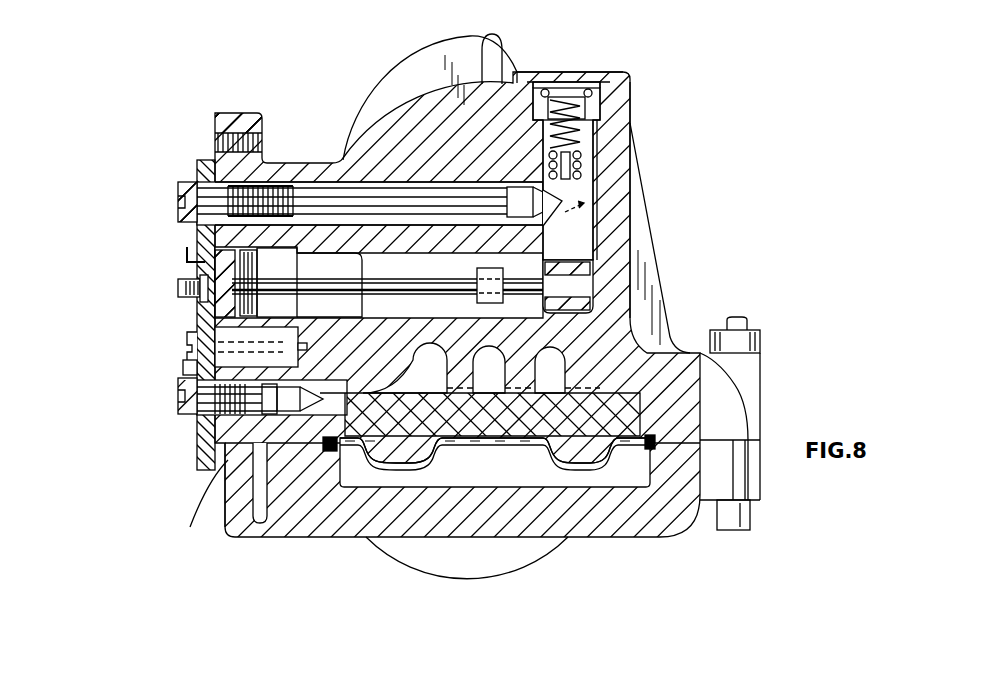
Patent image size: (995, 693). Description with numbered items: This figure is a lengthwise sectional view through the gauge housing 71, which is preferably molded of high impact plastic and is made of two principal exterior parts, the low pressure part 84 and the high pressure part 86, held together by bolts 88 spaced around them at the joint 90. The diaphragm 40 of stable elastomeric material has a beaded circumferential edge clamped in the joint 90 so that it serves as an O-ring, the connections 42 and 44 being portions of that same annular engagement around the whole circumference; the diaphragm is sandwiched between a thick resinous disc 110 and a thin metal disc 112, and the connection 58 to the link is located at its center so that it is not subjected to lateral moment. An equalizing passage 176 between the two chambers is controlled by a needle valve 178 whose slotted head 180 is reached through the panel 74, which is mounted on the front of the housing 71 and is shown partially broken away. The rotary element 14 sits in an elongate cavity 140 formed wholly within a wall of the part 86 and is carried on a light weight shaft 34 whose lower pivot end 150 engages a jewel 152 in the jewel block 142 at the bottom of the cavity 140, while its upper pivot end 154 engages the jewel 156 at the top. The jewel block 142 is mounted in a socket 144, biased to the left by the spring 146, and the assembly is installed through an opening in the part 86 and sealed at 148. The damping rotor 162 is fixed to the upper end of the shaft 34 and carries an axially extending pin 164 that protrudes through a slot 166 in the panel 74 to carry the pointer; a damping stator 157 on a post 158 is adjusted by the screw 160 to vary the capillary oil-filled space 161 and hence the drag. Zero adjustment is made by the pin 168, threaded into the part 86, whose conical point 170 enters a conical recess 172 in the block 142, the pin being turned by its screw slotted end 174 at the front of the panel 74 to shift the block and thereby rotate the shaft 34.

The rotary element 14 is at (480, 272).
The housing 71 is at (435, 90).
The panel 74 is at (197, 165).
The pivot end 154 is at (200, 310).
The screw slotted end 174 is at (182, 197).
The elongate cavity 140 is at (398, 285).
The high pressure part 86 is at (307, 177).
The pin 168 is at (445, 243).
The damping rotor 162 is at (197, 248).
The pin 164 is at (197, 258).
The shaft 34 is at (417, 265).
The jewel 152 is at (560, 284).
The pivot end 150 is at (552, 270).
The conical point 170 is at (550, 183).
The jewel block 142 is at (580, 237).
The seal 148 is at (542, 103).
The spring 146 is at (580, 130).
The conical recess 172 is at (560, 207).
The socket 144 is at (583, 307).
The slot 166 is at (185, 250).
The jewel 156 is at (180, 290).
The damping stator 157 is at (193, 272).
The space 161 is at (207, 338).
The screw 160 is at (197, 347).
The post 158 is at (190, 368).
The slotted head 180 is at (178, 408).
The equalizing passage 176 is at (290, 430).
The connection 58 is at (512, 468).
The low pressure part 84 is at (337, 527).
The diaphragm 40 is at (403, 473).
The thin metal disc 112 is at (460, 430).
The thick disc 110 is at (483, 450).
The connection 42 is at (328, 447).
The connection 44 is at (650, 443).
The needle valve 178 is at (258, 505).
The joint 90 is at (190, 527).
The bolts 88 is at (740, 520).